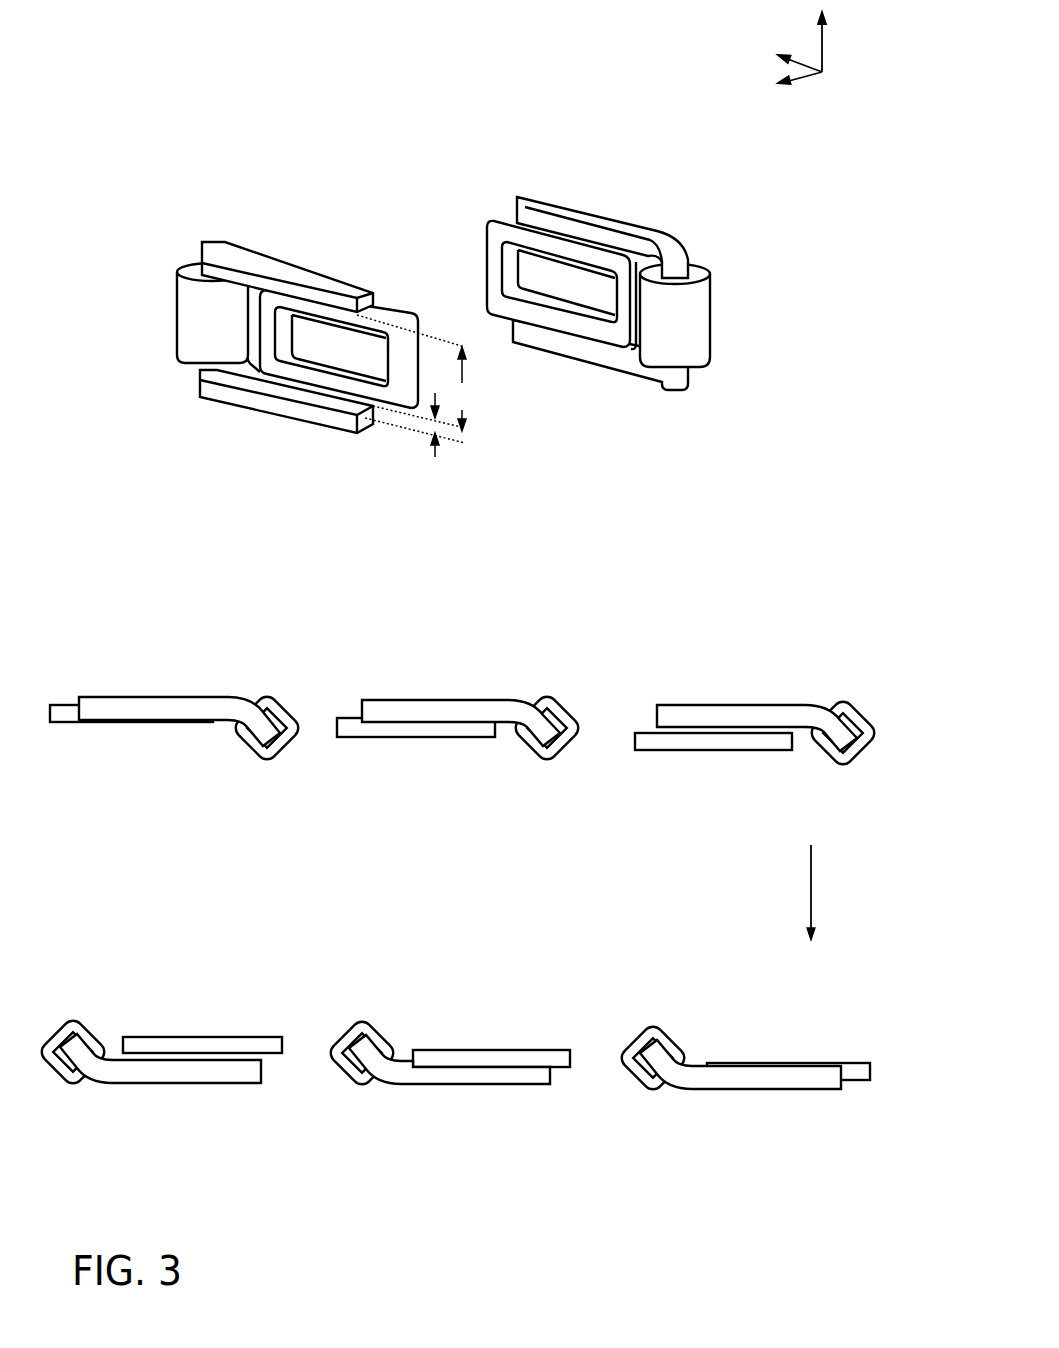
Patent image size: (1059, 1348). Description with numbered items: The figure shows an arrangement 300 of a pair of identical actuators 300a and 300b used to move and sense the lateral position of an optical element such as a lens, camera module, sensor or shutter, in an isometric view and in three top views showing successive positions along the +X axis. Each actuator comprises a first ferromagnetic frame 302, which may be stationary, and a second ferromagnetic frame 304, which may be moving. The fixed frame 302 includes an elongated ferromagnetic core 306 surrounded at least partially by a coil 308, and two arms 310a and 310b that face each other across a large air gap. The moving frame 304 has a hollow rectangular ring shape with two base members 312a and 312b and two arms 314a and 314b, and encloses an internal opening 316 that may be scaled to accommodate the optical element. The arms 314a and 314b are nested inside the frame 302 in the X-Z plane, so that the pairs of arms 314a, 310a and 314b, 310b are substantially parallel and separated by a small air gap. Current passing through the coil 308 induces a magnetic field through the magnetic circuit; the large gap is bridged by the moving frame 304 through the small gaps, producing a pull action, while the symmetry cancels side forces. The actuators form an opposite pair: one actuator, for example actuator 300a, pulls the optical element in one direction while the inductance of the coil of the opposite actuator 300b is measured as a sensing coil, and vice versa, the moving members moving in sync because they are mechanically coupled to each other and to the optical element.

The arrangement 300 is at (430, 91).
The actuator 300a is at (226, 165).
The actuator 300b is at (598, 165).
The first ferromagnetic frame 302 is at (670, 229).
The second ferromagnetic frame 304 is at (487, 243).
The elongated ferromagnetic core 306 is at (712, 288).
The coil 308 is at (700, 340).
The arm 310a is at (268, 266).
The arm 310b is at (262, 407).
The base member 312a is at (487, 291).
The base member 312b is at (618, 333).
The arm 314a is at (312, 308).
The arm 314b is at (313, 385).
The internal opening 316 is at (577, 298).